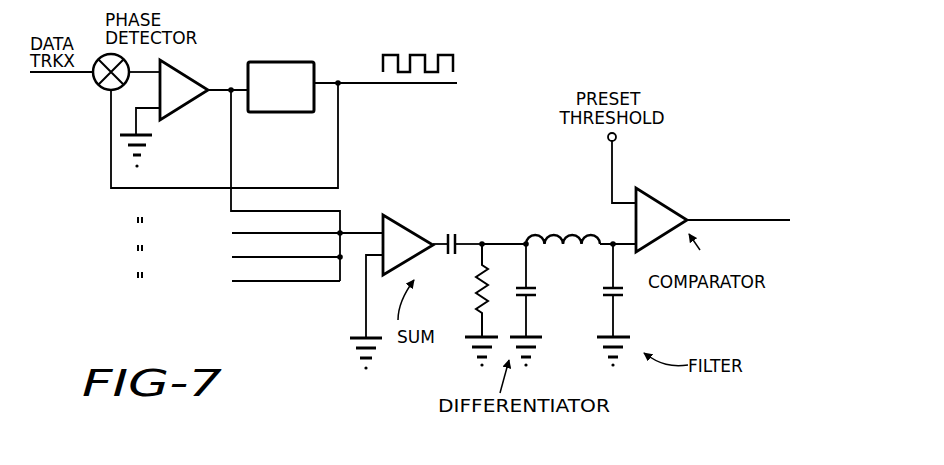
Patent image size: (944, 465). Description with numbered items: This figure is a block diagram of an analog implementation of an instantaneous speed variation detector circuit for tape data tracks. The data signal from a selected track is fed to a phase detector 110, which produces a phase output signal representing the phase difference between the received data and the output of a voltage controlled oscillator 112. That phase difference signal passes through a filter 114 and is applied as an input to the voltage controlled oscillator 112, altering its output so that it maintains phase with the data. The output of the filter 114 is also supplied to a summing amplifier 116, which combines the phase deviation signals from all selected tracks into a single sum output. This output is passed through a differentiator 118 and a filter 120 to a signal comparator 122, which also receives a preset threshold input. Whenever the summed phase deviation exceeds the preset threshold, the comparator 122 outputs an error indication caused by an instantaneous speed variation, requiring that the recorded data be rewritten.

The phase detector 110 is at (97, 85).
The voltage controlled oscillator 112 is at (297, 62).
The filter 114 is at (184, 75).
The summing amplifier 116 is at (420, 196).
The differentiator 118 is at (470, 257).
The filter 120 is at (592, 248).
The signal comparator 122 is at (652, 198).